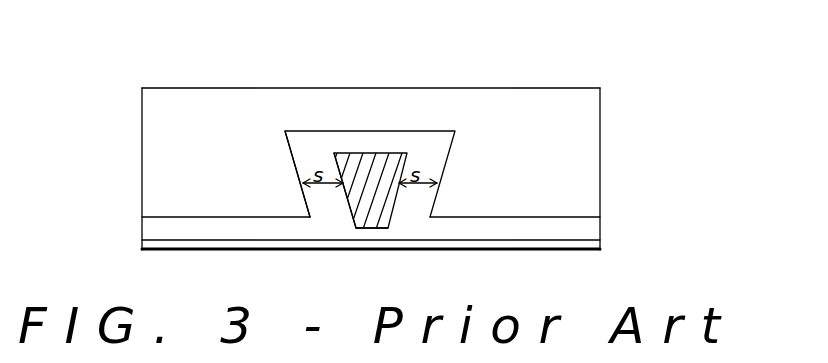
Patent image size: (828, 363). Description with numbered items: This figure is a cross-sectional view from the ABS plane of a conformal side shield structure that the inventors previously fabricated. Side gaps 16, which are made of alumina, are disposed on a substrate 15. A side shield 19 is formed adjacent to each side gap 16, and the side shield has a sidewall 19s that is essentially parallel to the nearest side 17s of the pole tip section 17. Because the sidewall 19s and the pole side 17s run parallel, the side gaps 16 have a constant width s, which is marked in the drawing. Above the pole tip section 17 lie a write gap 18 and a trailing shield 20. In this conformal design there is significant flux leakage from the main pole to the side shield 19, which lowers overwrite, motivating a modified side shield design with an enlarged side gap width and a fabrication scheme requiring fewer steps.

The substrate 15 is at (583, 244).
The side gaps 16 is at (407, 212).
The pole tip section 17 is at (383, 162).
The side of the pole tip section 17s is at (337, 162).
The write gap 18 is at (298, 142).
The side shield 19 is at (157, 160).
The sidewall of the side shield 19s is at (303, 196).
The trailing shield 20 is at (370, 115).